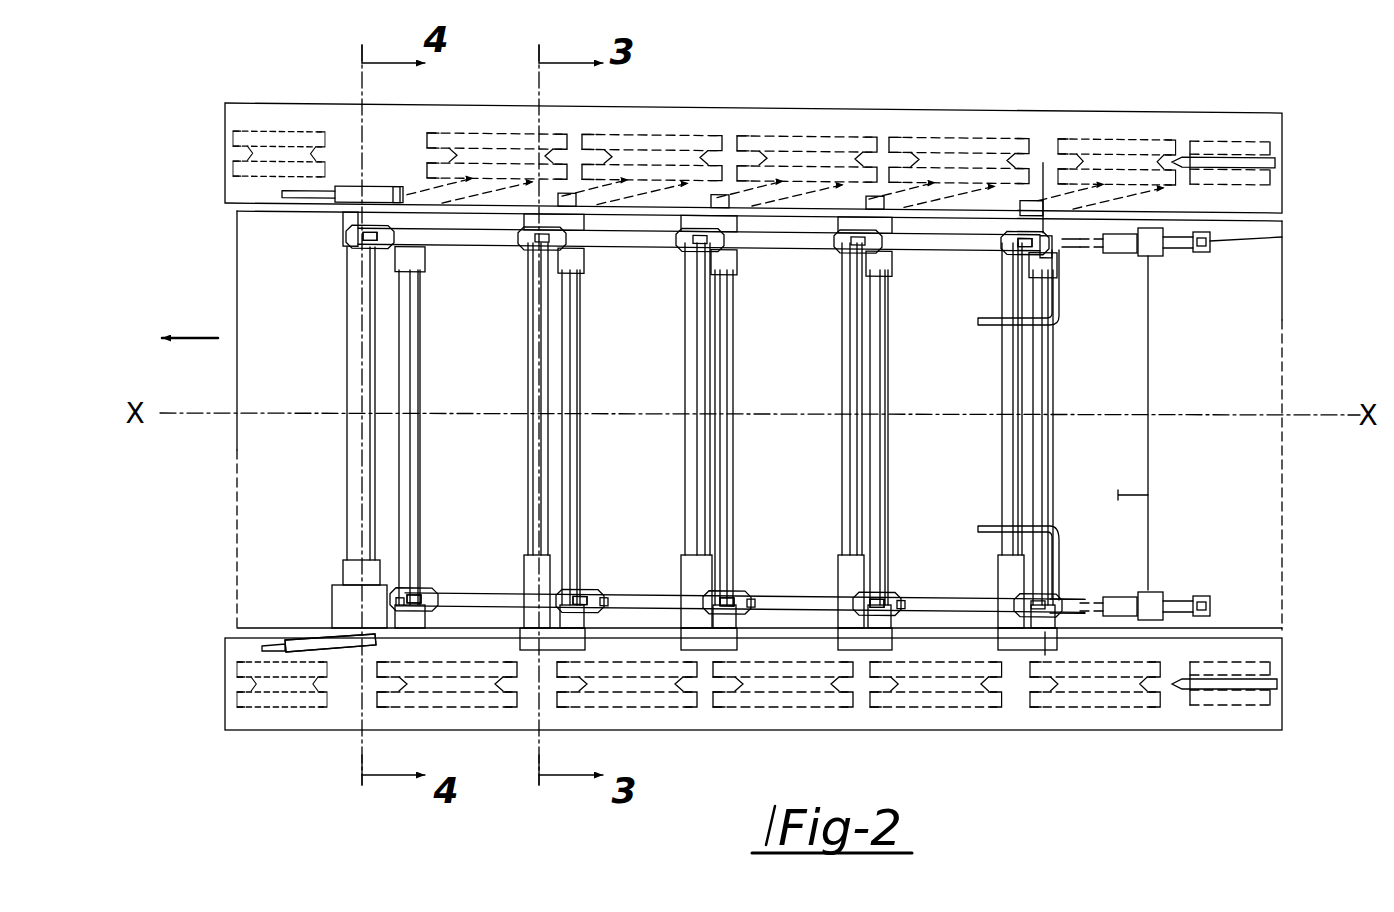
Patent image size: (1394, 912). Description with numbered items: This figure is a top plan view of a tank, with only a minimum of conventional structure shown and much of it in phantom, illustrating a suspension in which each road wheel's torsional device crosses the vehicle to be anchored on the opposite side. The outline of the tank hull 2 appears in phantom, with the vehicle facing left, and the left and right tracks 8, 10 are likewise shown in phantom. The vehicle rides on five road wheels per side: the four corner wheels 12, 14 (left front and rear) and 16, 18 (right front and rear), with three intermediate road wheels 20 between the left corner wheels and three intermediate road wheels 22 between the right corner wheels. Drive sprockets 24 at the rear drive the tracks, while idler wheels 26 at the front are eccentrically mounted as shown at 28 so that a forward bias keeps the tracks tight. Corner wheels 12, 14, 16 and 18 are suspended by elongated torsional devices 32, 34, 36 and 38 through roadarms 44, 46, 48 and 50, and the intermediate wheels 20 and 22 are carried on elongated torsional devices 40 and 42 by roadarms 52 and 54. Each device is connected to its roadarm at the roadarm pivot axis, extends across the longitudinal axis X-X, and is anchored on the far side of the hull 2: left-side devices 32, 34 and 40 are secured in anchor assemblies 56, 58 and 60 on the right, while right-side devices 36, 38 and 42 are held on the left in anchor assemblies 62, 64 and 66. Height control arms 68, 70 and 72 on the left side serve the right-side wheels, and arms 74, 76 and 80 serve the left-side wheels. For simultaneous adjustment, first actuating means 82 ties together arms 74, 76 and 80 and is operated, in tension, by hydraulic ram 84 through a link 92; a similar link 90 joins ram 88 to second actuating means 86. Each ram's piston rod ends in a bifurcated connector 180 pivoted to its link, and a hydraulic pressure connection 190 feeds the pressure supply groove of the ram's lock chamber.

The tank hull 2 is at (234, 452).
The left track 8 is at (848, 733).
The right track 10 is at (942, 111).
The left front corner wheel 12 is at (463, 707).
The left rear corner wheel 14 is at (1105, 727).
The right front corner wheel 16 is at (480, 128).
The right rear corner wheel 18 is at (1190, 128).
The intermediate road wheels 20 is at (775, 707).
The intermediate road wheels 22 is at (748, 122).
The drive sprockets 24 is at (1272, 135).
The idler wheels 26 is at (233, 150).
The eccentric mounting 28 is at (372, 184).
The elongated torsional device 32 is at (345, 478).
The elongated torsional device 34 is at (1000, 441).
The elongated torsional device 36 is at (423, 392).
The elongated torsional device 38 is at (1056, 368).
The elongated torsional devices 40 is at (526, 458).
The elongated torsional devices 42 is at (582, 363).
The roadarm 44 is at (346, 655).
The roadarm 46 is at (1032, 648).
The roadarm 48 is at (405, 185).
The roadarm 50 is at (1090, 128).
The roadarms 52 is at (542, 634).
The roadarms 54 is at (660, 170).
The anchor assembly 56 is at (340, 233).
The anchor assembly 58 is at (1008, 237).
The anchor assemblies 60 is at (522, 225).
The anchor assembly 62 is at (430, 604).
The anchor assembly 64 is at (1068, 608).
The anchor assemblies 66 is at (606, 605).
The control arm 68 is at (424, 596).
The control arm 70 is at (1048, 600).
The height control arms 72 is at (592, 596).
The height control arm 74 is at (366, 252).
The height control arm 76 is at (1038, 245).
The height control arms 80 is at (541, 250).
The first actuating means 82 is at (986, 287).
The hydraulic ram 84 is at (1117, 258).
The second actuating means 86 is at (470, 596).
The hydraulic ram 88 is at (1130, 598).
The link 90 is at (1068, 530).
The link 92 is at (1050, 245).
The bifurcated connector 180 is at (1207, 252).
The hydraulic pressure connection 190 is at (1148, 262).